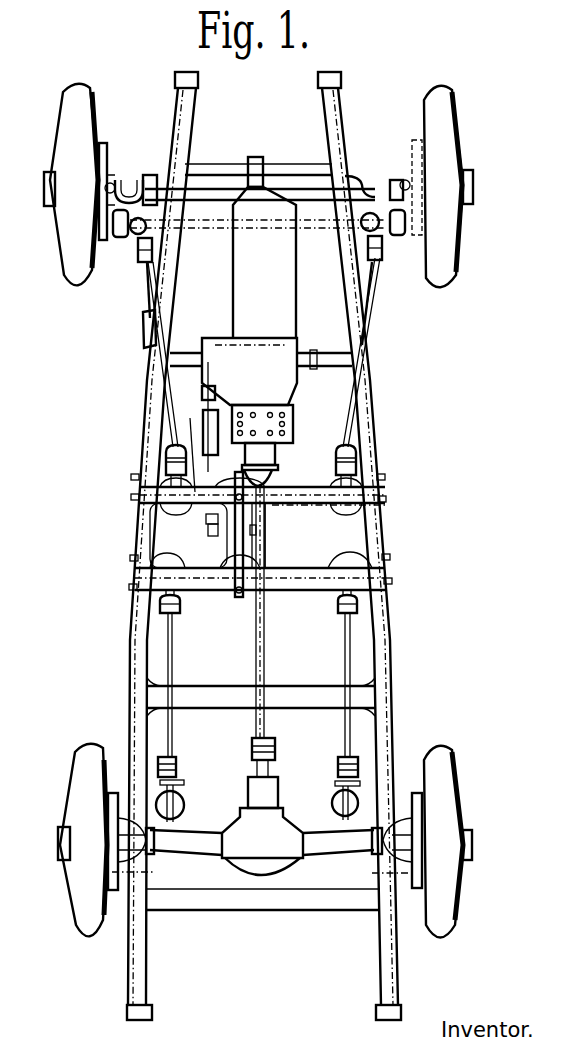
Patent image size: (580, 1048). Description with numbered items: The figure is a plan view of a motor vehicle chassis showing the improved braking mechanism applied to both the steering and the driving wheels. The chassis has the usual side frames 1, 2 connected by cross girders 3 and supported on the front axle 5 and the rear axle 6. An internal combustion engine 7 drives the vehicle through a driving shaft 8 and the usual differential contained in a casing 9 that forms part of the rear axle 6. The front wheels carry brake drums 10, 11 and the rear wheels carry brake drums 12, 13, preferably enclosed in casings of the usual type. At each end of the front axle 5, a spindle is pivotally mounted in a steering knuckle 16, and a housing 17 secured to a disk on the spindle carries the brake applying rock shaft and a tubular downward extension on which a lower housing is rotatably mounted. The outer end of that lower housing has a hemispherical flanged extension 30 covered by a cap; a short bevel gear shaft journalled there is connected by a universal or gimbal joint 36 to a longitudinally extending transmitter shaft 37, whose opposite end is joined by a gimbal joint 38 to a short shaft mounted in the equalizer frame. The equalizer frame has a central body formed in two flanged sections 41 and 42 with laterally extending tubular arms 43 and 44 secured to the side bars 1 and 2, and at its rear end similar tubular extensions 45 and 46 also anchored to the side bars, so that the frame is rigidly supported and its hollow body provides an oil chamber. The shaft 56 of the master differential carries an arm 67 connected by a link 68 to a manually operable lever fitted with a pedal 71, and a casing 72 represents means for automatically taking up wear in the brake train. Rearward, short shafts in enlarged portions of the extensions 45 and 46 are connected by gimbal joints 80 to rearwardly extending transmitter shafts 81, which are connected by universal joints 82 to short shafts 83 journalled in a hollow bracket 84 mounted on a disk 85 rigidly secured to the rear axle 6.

The side frame 1 is at (387, 609).
The side frame 2 is at (133, 626).
The cross girder 3 is at (287, 164).
The front axle 5 is at (133, 185).
The rear axle 6 is at (265, 851).
The internal combustion engine 7 is at (242, 276).
The driving shaft 8 is at (265, 613).
The differential casing 9 is at (237, 865).
The brake drum 10 is at (408, 147).
The brake drum 11 is at (100, 150).
The brake drum 12 is at (415, 790).
The brake drum 13 is at (108, 793).
The steering knuckle 16 is at (110, 184).
The housing 17 is at (117, 238).
The hemispherical flanged extension 30 is at (145, 225).
The universal or gimbal joint 36 is at (143, 265).
The transmitter shaft 37 is at (146, 292).
The gimbal joint 38 is at (170, 461).
The equalizer frame body section 41 is at (265, 478).
The equalizer frame body section 42 is at (237, 478).
The tubular arm 43 is at (320, 487).
The tubular arm 44 is at (187, 444).
The tubular extension 45 is at (307, 566).
The tubular extension 46 is at (197, 555).
The master differential shaft 56 is at (258, 530).
The arm 67 is at (206, 524).
The link 68 is at (165, 497).
The pedal 71 is at (202, 390).
The casing 72 is at (212, 425).
The universal or gimbal joint 80 is at (180, 607).
The transmitter shaft 81 is at (173, 660).
The universal joint 82 is at (176, 766).
The short shaft 83 is at (184, 784).
The hollow bracket 84 is at (184, 802).
The disk 85 is at (263, 873).